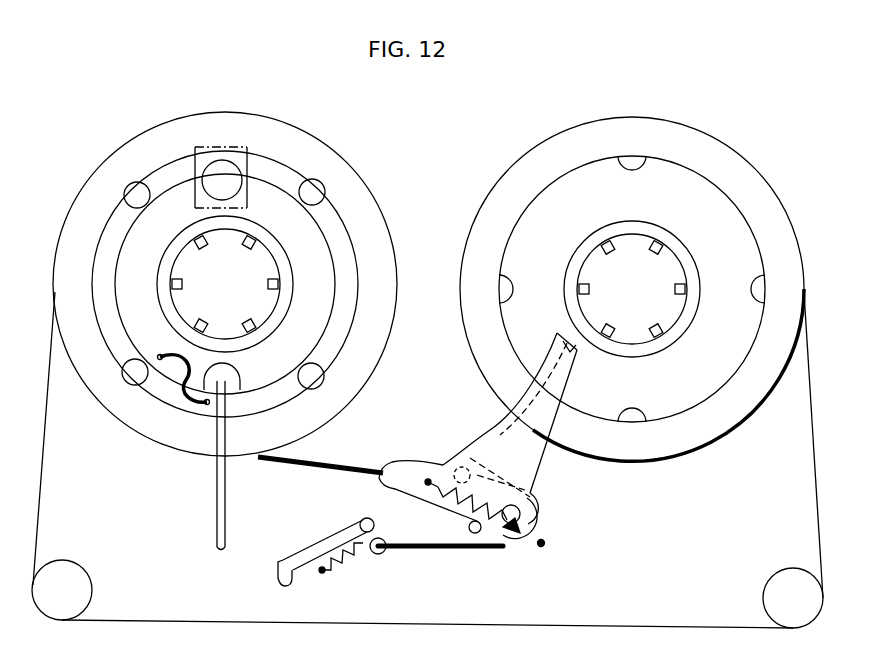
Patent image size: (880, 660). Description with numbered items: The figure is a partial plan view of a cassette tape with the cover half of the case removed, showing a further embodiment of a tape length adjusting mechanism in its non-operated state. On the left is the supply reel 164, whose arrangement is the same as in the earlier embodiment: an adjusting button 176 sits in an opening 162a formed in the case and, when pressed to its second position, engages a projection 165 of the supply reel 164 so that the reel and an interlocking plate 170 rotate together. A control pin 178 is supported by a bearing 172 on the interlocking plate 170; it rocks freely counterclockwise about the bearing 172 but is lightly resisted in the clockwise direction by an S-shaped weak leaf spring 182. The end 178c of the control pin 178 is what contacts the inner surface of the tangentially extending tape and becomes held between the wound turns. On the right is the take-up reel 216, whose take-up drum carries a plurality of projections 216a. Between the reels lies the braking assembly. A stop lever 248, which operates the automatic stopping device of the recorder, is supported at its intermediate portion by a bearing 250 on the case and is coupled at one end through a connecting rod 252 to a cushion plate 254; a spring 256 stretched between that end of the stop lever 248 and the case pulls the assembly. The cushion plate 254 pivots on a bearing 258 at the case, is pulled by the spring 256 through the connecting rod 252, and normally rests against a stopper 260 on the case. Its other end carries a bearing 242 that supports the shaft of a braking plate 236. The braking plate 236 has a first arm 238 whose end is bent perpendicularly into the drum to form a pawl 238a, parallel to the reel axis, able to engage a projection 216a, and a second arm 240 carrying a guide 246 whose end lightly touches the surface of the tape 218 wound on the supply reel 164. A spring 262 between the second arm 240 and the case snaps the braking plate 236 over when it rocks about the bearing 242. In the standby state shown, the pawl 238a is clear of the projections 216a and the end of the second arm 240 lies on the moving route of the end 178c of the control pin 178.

The opening 162a is at (212, 147).
The supply reel 164 is at (338, 214).
The projection 165 is at (133, 193).
The interlocking plate 170 is at (327, 296).
The bearing 172 is at (232, 374).
The adjusting button 176 is at (234, 182).
The control pin 178 is at (214, 482).
The end of control pin 178c is at (226, 547).
The S-shaped weak leaf spring 182 is at (185, 388).
The take-up reel 216 is at (745, 220).
The projections 216a is at (632, 160).
The tape 218 is at (42, 497).
The braking plate 236 is at (537, 496).
The first arm 238 is at (540, 458).
The pawl 238a is at (567, 358).
The second arm 240 is at (402, 463).
The bearing 242 is at (545, 543).
The guide 246 is at (338, 464).
The stop lever 248 is at (273, 575).
The bearing 250 is at (358, 518).
The connecting rod 252 is at (403, 548).
The cushion plate 254 is at (514, 540).
The spring 256 is at (352, 570).
The bearing 258 is at (460, 468).
The stopper 260 is at (470, 533).
The spring 262 is at (428, 484).